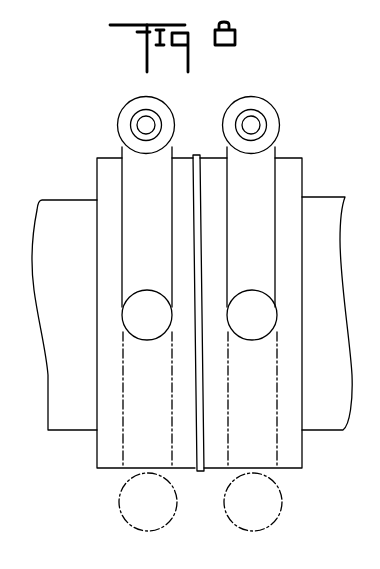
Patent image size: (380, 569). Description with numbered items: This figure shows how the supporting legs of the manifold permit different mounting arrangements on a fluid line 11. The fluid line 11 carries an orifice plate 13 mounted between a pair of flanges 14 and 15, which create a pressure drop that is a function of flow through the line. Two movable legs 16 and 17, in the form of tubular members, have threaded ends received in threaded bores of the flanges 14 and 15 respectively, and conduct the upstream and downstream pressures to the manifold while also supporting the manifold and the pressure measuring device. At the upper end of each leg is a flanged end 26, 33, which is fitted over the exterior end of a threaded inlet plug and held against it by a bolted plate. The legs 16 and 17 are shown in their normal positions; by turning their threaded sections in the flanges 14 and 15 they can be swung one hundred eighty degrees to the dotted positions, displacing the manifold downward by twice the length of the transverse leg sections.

The fluid line 11 is at (67, 417).
The orifice plate 13 is at (200, 472).
The flange 14 is at (103, 452).
The flange 15 is at (297, 445).
The movable leg 16 is at (130, 180).
The movable leg 17 is at (260, 178).
The flanged end 26 is at (131, 102).
The flanged end 33 is at (252, 101).